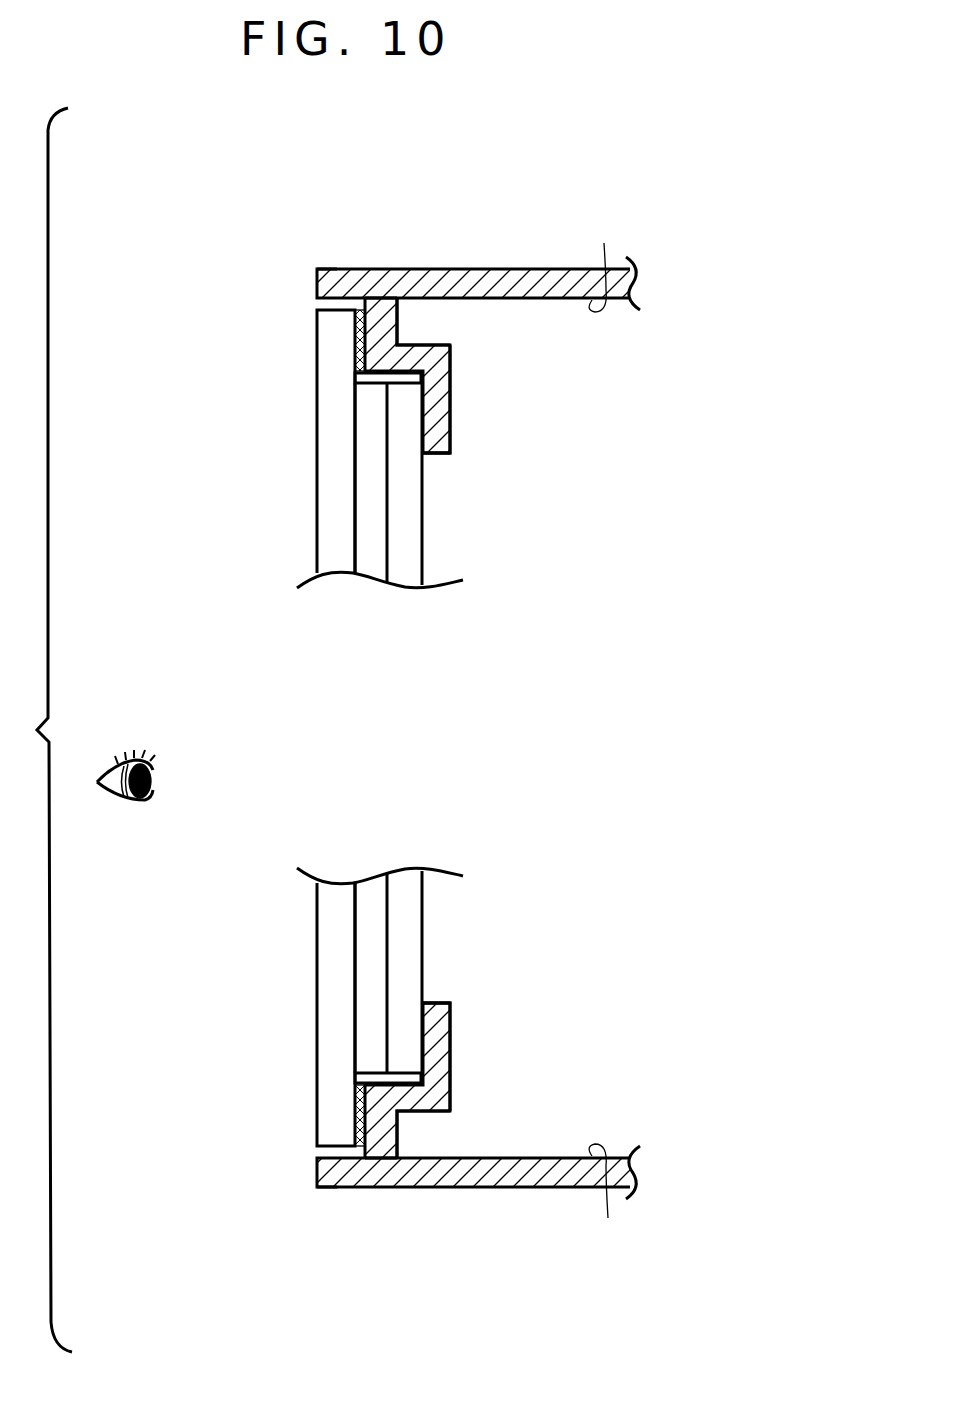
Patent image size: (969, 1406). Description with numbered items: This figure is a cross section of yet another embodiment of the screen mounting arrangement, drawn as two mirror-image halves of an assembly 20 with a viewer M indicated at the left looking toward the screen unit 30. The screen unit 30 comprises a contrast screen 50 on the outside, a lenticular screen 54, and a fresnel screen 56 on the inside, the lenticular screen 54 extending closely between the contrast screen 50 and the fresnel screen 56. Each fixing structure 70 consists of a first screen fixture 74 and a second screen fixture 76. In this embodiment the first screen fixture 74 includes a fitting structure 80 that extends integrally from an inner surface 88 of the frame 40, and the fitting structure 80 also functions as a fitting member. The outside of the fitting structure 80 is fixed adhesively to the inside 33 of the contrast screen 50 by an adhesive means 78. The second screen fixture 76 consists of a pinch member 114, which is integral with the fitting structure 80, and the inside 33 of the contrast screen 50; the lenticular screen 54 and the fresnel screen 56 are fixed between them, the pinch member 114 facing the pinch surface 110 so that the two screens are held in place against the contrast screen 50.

The display device 20 is at (563, 194).
The display panel unit 30 is at (318, 610).
The inside of the contrast screen 33 is at (346, 386).
The frame 40 is at (520, 268).
The contrast screen 50 is at (330, 528).
The lenticular screen 54 is at (373, 568).
The fresnel screen 56 is at (408, 548).
The fixing structure 70 is at (562, 438).
The first screen fixture 74 is at (428, 322).
The second screen fixture 76 is at (480, 396).
The adhesive means 78 is at (355, 341).
The fitting structure 80 is at (386, 298).
The inner surface of the frame 88 is at (607, 730).
The pinch surface 110 is at (355, 472).
The pinch member 114 is at (437, 455).
The viewer M is at (125, 802).